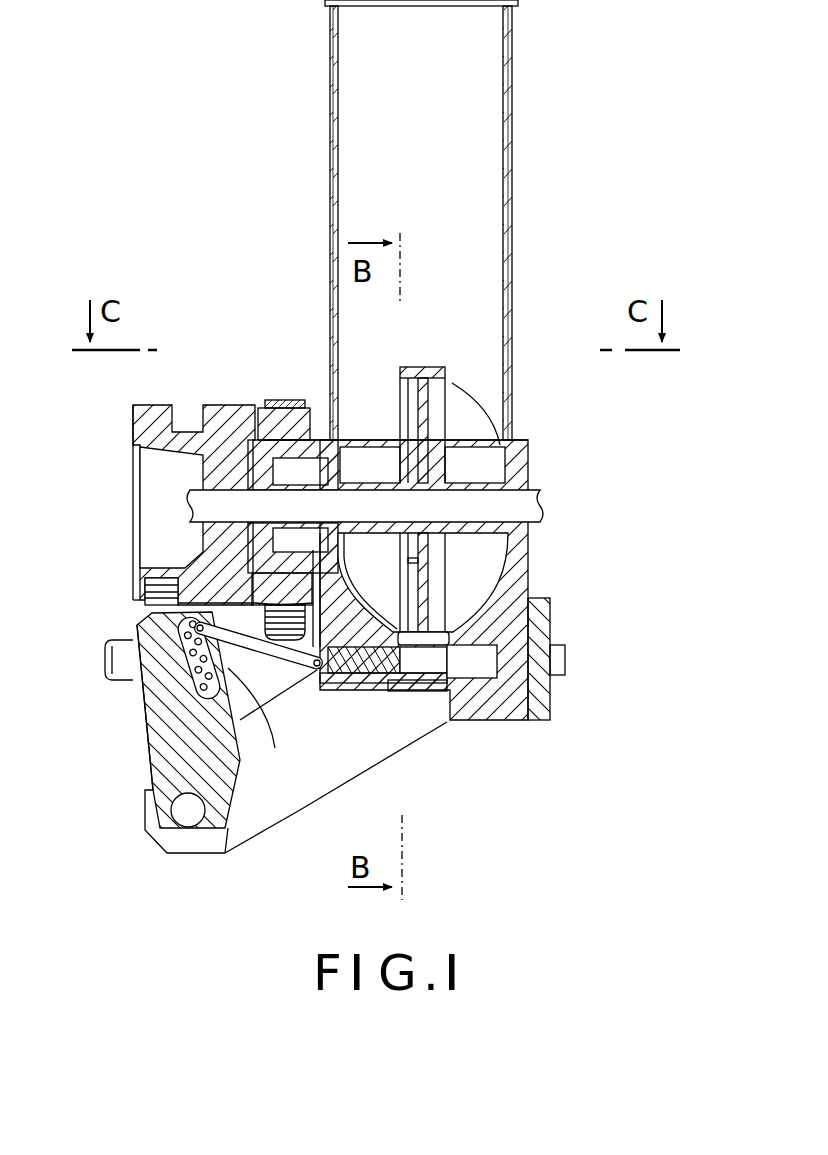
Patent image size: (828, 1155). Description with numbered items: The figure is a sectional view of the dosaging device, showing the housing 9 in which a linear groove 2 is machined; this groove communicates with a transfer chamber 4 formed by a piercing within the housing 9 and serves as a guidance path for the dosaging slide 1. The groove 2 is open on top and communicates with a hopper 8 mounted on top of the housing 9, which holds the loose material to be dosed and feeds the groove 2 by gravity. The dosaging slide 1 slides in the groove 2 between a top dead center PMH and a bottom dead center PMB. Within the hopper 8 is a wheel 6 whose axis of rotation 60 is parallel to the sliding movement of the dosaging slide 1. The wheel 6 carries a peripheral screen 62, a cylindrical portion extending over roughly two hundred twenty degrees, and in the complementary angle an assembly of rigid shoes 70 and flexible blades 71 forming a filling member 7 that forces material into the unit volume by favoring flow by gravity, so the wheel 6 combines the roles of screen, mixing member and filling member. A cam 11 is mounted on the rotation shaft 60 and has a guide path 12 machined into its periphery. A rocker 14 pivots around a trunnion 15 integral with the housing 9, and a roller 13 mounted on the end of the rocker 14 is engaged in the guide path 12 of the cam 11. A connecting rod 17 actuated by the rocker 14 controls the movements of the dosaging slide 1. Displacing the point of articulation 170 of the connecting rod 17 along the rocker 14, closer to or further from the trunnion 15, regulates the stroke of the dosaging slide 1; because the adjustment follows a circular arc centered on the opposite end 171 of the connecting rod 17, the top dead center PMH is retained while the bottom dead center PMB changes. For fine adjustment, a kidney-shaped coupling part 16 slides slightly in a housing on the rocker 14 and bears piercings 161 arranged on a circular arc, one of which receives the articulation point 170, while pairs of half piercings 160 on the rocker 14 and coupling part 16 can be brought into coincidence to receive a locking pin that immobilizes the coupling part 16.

The dosaging slide 1 is at (365, 670).
The linear groove 2 is at (435, 668).
The transfer chamber 4 is at (490, 672).
The wheel 6 is at (470, 315).
The filling member 7 is at (470, 573).
The hopper 8 is at (477, 122).
The housing 9 is at (520, 585).
The cam 11 is at (140, 420).
The guide path 12 is at (198, 412).
The roller 13 is at (150, 598).
The rocker 14 is at (165, 748).
The trunnion 15 is at (186, 818).
The kidney-shaped coupling part 16 is at (140, 632).
The connecting rod 17 is at (290, 668).
The rotation shaft 60 is at (530, 490).
The peripheral screen 62 is at (445, 367).
The rigid shoes 70 is at (465, 637).
The flexible blades 71 is at (465, 610).
The half piercings 160 is at (162, 700).
The piercings 161 is at (272, 766).
The point of articulation 170 is at (287, 672).
The opposite end 171 is at (318, 677).
The bottom dead center PMB is at (407, 688).
The top dead center PMH is at (455, 694).